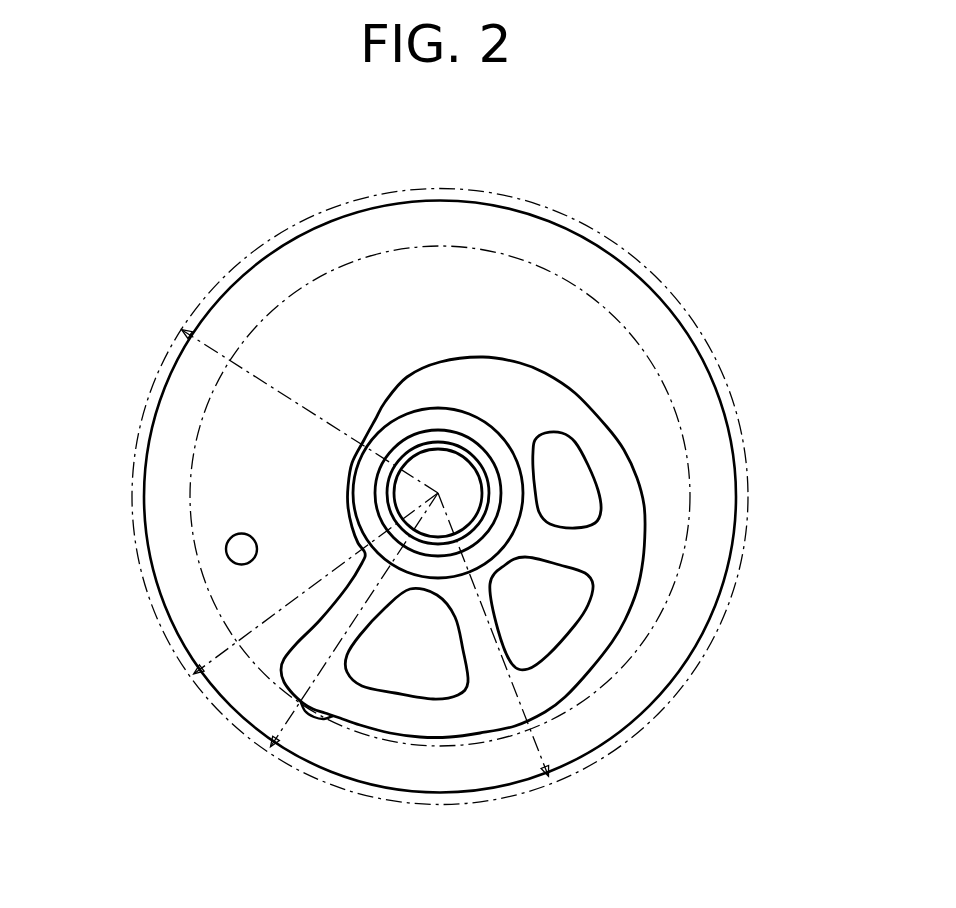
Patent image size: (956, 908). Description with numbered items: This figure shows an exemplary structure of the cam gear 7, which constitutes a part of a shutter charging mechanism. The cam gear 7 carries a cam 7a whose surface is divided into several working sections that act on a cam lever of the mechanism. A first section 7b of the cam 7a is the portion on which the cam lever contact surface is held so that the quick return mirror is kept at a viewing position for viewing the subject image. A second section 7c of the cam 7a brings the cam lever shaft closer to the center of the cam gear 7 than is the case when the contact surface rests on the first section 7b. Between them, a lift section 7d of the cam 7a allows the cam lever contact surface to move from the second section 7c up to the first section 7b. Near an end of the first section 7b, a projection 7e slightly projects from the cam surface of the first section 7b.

The cam gear 7 is at (312, 256).
The cam 7a is at (623, 532).
The first section of the cam 7b is at (437, 795).
The second section of the cam 7c is at (133, 505).
The lift section of the cam 7d is at (737, 573).
The projection 7e is at (315, 722).